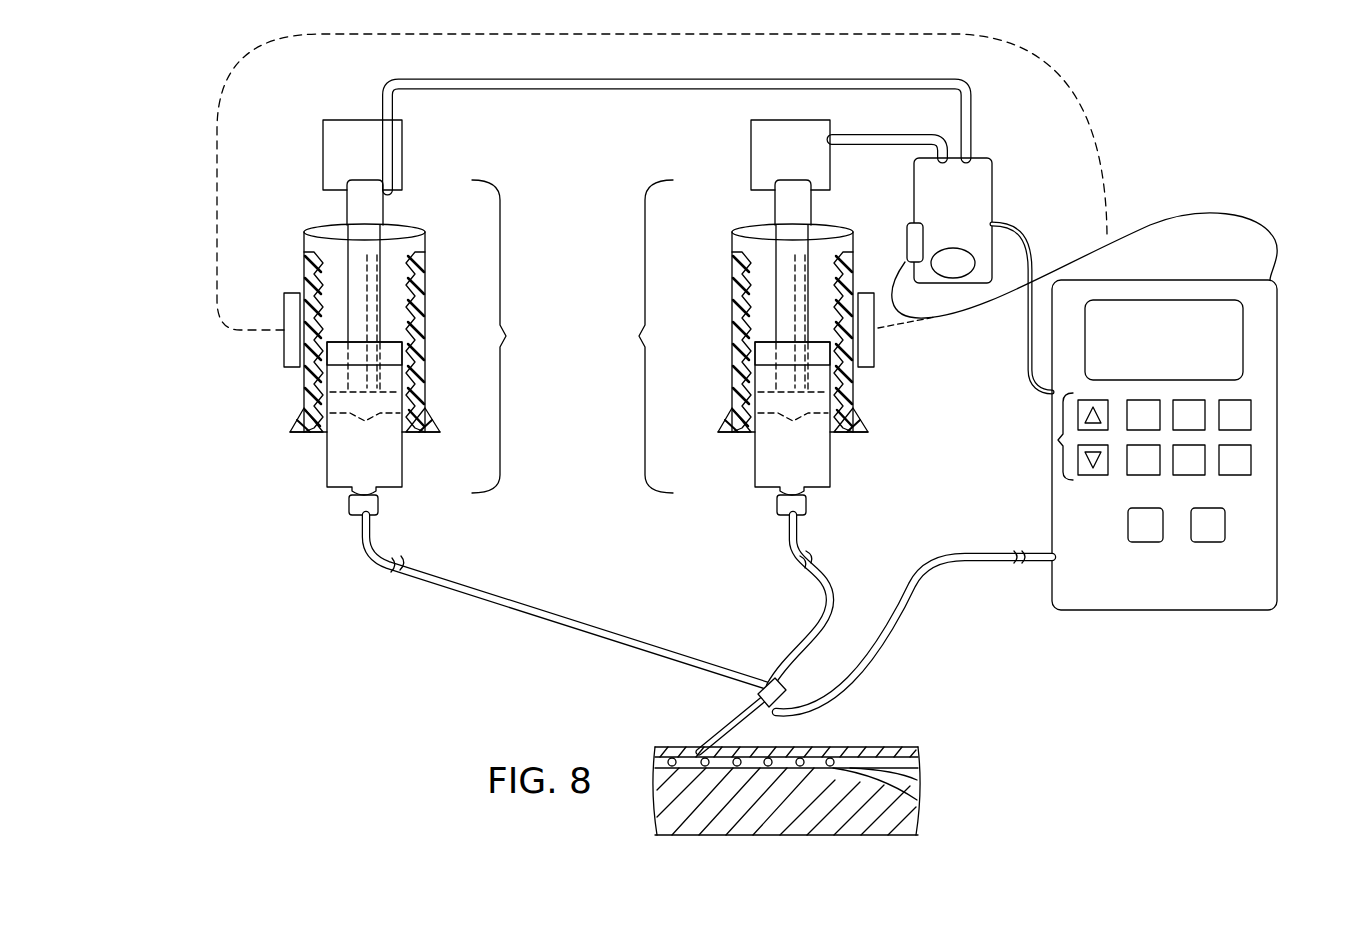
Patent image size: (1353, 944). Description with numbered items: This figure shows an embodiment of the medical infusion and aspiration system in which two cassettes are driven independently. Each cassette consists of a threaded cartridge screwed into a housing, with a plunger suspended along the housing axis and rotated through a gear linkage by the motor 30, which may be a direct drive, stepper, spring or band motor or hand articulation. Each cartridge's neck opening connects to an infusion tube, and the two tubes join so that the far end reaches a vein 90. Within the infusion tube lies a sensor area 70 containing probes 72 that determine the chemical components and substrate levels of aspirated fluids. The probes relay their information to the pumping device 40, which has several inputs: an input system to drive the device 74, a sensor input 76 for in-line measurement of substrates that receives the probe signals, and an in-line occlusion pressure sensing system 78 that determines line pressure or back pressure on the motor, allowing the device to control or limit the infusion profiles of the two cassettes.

The motor 30 is at (990, 177).
The pumping device 40 is at (1278, 430).
The sensor area 70 is at (756, 690).
The probes 72 is at (745, 706).
The input system to drive the device 74 is at (1057, 440).
The sensor input for in-line measurement of substrates 76 is at (1040, 565).
The in-line occlusion pressure sensing system 78 is at (1186, 213).
The vein 90 is at (905, 812).